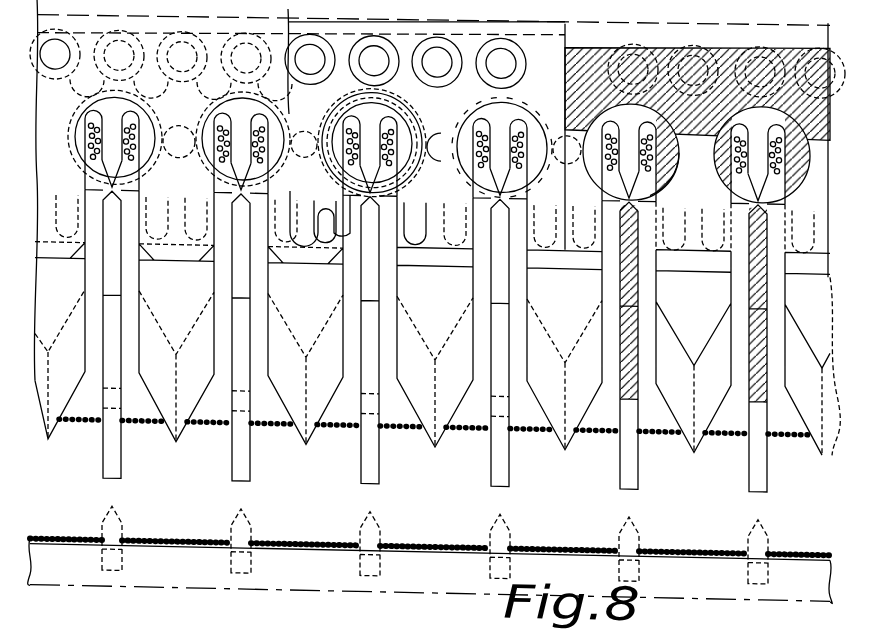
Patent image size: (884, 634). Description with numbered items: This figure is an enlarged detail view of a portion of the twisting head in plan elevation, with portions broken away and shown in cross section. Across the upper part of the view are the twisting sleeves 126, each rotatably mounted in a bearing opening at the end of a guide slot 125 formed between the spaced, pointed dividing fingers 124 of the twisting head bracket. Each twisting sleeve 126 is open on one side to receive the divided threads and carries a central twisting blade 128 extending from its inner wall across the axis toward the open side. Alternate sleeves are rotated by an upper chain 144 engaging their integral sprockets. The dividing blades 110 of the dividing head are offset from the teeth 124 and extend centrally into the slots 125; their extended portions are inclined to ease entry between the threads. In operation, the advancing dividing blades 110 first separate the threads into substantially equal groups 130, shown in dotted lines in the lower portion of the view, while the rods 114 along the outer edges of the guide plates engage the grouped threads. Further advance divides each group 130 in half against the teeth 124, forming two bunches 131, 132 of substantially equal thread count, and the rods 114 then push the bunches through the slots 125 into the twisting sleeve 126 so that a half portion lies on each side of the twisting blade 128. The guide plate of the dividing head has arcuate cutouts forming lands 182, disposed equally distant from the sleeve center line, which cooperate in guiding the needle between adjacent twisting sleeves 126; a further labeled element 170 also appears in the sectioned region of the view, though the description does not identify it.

The dividing blade 110 is at (367, 264).
The rod 114 is at (307, 587).
The dividing finger 124 is at (176, 436).
The guide slot 125 is at (525, 452).
The twisting sleeve 126 is at (385, 94).
The twisting blade 128 is at (492, 184).
The group of threads 130 is at (405, 538).
The bunch of threads 131 is at (266, 423).
The bunch of threads 132 is at (343, 424).
The upper chain 144 is at (370, 30).
The hatched body 170 is at (670, 162).
The land 182 is at (667, 172).